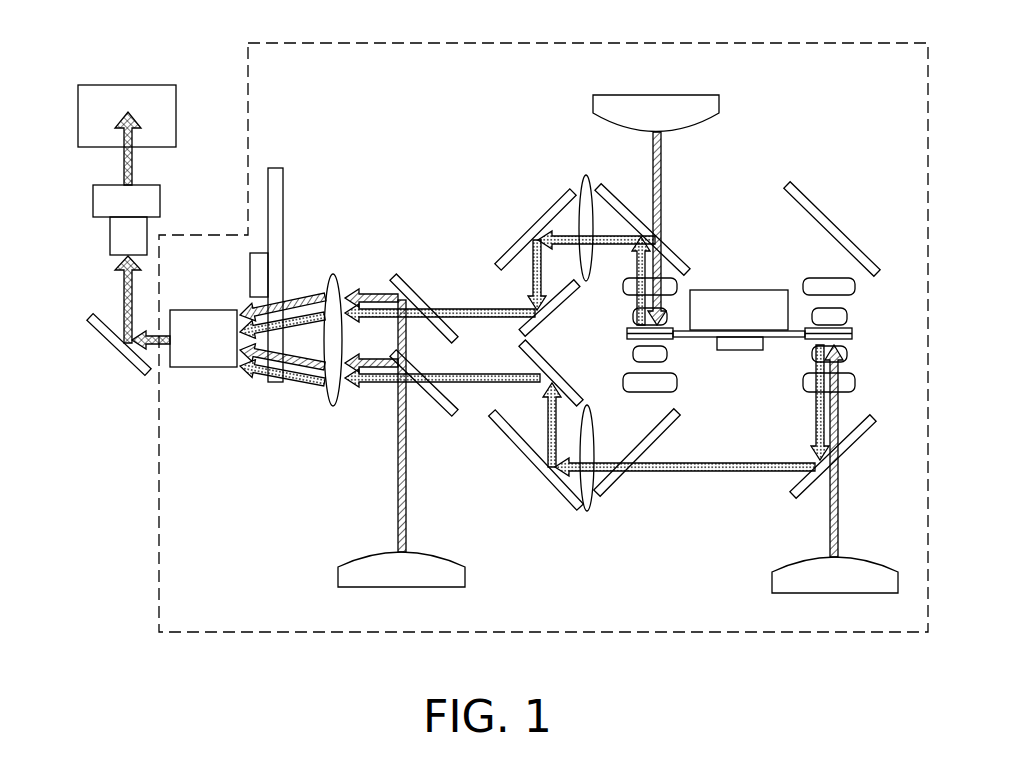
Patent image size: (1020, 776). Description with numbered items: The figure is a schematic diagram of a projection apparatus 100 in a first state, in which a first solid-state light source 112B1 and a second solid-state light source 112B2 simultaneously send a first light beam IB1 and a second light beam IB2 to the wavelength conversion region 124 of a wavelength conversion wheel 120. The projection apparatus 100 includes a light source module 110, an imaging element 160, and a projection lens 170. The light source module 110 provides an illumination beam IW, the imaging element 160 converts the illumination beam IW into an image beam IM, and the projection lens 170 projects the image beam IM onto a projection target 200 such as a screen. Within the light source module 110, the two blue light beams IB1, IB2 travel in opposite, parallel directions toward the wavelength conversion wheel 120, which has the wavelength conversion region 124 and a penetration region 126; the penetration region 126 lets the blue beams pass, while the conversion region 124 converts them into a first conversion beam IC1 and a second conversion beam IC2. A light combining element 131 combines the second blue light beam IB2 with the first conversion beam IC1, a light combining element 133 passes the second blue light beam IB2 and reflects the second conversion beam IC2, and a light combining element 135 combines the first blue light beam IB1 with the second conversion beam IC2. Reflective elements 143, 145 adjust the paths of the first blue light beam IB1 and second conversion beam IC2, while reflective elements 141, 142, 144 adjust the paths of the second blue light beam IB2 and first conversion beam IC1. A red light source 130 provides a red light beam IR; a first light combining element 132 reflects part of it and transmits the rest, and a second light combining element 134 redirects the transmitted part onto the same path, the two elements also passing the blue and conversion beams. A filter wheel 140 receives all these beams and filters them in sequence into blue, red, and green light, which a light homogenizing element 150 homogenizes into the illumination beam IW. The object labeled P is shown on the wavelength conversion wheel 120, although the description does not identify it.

The projection apparatus 100 is at (915, 680).
The light source module 110 is at (697, 42).
The projection target 200 is at (157, 93).
The projection lens 170 is at (150, 203).
The imaging element 160 is at (120, 347).
The light homogenizing element 150 is at (210, 358).
The filter wheel 140 is at (278, 173).
The red light source 130 is at (460, 577).
The first light combining element 132 is at (438, 397).
The second light combining element 134 is at (402, 283).
The reflective element 142 is at (552, 213).
The reflective element 143 is at (540, 462).
The reflective element 144 is at (560, 303).
The reflective element 145 is at (548, 367).
The light combining element 131 is at (668, 255).
The light combining element 135 is at (663, 417).
The light combining element 133 is at (870, 413).
The reflective element 141 is at (827, 223).
The first solid-state light source 112B1 is at (710, 110).
The second solid-state light source 112B2 is at (777, 580).
The wavelength conversion wheel 120 is at (852, 334).
The wavelength conversion region 124 is at (855, 344).
The penetration region 126 is at (797, 315).
The object under inspection P is at (740, 336).
The image beam IM is at (132, 170).
The illumination beam IW is at (168, 338).
The red light beam IR is at (398, 455).
The first light beam IB1 is at (660, 192).
The second light beam IB2 is at (840, 497).
The first conversion beam IC1 is at (533, 278).
The second conversion beam IC2 is at (700, 471).